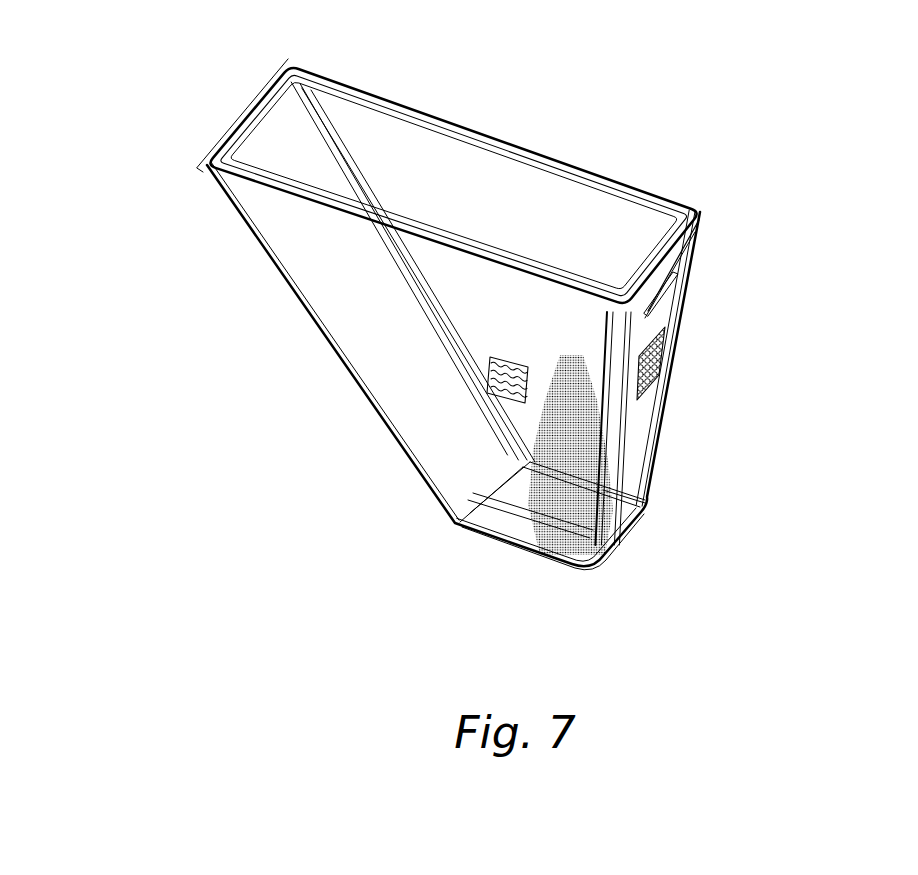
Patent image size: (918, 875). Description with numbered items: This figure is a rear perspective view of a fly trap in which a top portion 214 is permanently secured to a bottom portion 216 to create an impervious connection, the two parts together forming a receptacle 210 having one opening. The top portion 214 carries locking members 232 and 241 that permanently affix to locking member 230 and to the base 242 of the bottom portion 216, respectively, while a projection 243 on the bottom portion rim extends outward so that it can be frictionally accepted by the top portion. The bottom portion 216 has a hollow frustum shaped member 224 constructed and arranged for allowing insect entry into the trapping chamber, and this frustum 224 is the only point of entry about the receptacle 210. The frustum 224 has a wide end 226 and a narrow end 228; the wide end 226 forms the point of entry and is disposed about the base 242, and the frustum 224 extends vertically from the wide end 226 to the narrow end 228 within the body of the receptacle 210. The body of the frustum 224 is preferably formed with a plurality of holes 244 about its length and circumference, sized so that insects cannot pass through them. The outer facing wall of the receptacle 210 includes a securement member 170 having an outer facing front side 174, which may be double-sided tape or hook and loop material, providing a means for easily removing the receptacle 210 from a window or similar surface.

The receptacle 210 is at (215, 258).
The top portion 214 is at (543, 182).
The bottom portion 216 is at (378, 353).
The hollow frustum shaped member 224 is at (572, 440).
The wide end 226 is at (600, 514).
The narrow end 228 is at (568, 355).
The locking member 230 is at (237, 138).
The locking member 232 is at (277, 127).
The locking member 241 is at (656, 264).
The base 242 is at (503, 518).
The projection 243 is at (673, 253).
The holes 244 is at (580, 422).
The securement member 170 is at (663, 344).
The front side 174 is at (492, 380).